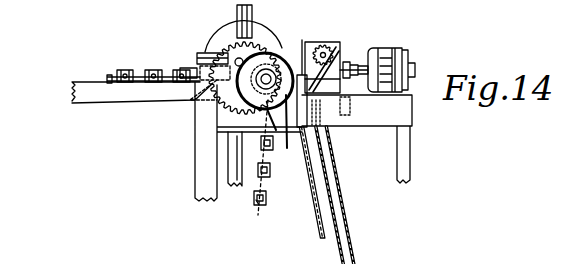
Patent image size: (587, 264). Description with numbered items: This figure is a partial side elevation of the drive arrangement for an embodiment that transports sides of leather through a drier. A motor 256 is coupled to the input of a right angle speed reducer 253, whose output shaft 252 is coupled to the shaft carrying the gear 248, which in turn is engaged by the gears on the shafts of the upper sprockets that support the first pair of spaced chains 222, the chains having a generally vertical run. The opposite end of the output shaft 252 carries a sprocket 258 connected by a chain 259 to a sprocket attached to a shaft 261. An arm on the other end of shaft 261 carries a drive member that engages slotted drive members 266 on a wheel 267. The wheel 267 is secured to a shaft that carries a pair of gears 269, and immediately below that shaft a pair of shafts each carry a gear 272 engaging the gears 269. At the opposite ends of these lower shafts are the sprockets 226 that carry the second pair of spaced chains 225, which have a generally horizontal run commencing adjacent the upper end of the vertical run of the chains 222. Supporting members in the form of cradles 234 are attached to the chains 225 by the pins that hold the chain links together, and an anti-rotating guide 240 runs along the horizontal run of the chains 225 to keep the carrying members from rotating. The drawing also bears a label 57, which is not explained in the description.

The anti-rotating guide 240 is at (81, 80).
The second pair of spaced chains 225 is at (138, 77).
The cradles 234 is at (121, 72).
The gears 269 is at (226, 48).
The gear 248 is at (326, 42).
The wheel 267 is at (228, 34).
The slotted drive members 266 is at (254, 10).
The gear 272 is at (221, 107).
The sprockets 226 is at (222, 109).
The chain 259 is at (303, 42).
The sprocket 258 is at (352, 31).
The brace 57 is at (322, 86).
The output shaft 252 is at (349, 60).
The motor 256 is at (410, 50).
The right angle speed reducer 253 is at (338, 92).
The first pair of spaced chains 222 is at (320, 226).
The shaft 261 is at (287, 148).